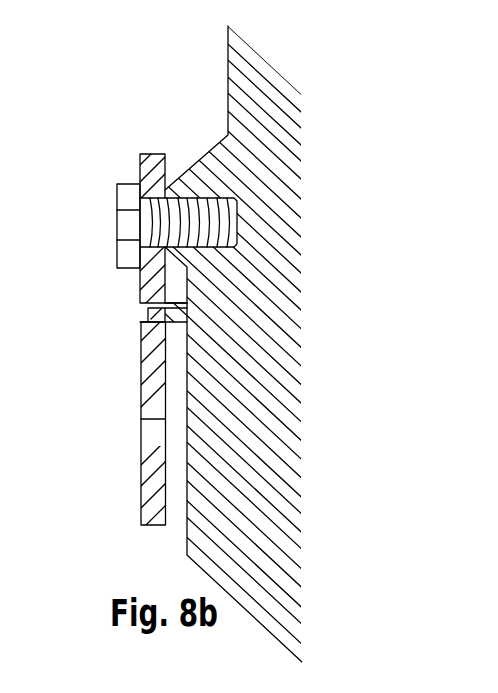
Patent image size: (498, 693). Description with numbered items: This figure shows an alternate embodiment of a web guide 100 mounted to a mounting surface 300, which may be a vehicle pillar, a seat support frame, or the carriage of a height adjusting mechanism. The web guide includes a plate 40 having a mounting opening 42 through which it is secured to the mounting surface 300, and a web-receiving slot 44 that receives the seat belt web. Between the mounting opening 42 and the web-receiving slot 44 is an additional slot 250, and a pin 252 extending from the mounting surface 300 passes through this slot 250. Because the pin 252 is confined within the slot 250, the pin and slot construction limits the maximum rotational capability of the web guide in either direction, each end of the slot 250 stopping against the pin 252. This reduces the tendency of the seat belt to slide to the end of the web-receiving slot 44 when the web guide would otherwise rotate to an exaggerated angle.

The mounting surface 300 is at (234, 75).
The mounting opening 42 is at (138, 168).
The pin 252 is at (140, 306).
The slot 250 is at (143, 318).
The web guide 100 is at (101, 421).
The plate 40 is at (124, 359).
The web-receiving slot 44 is at (152, 437).